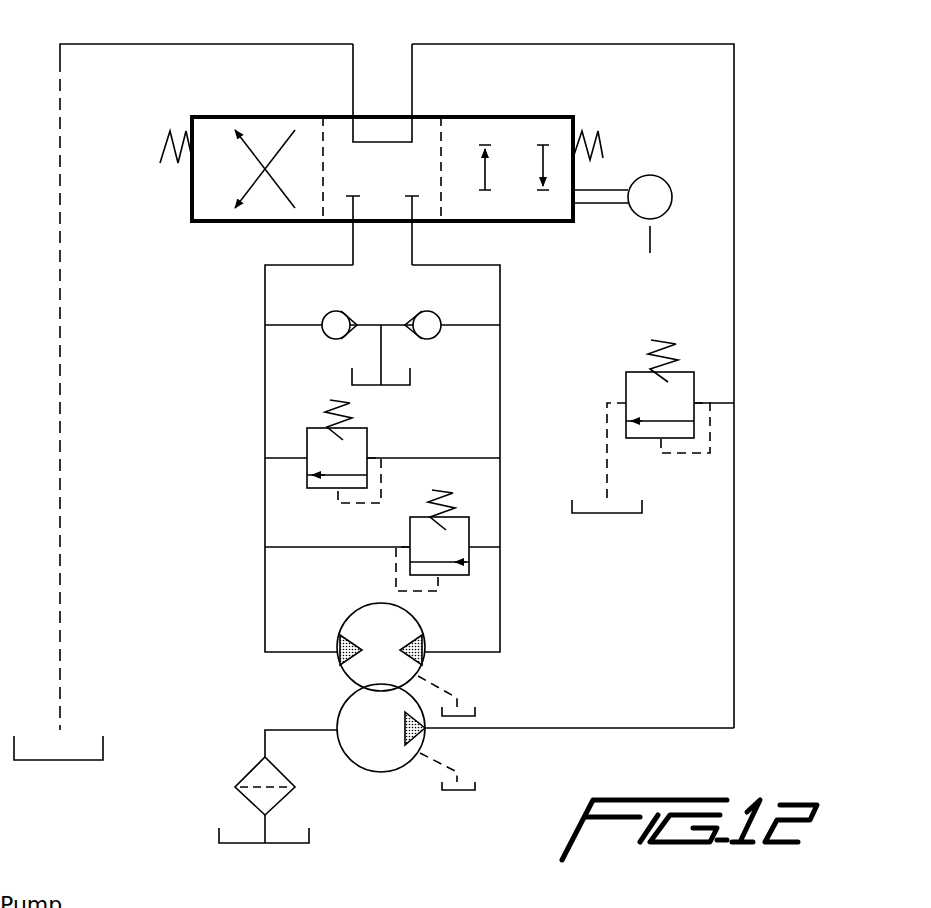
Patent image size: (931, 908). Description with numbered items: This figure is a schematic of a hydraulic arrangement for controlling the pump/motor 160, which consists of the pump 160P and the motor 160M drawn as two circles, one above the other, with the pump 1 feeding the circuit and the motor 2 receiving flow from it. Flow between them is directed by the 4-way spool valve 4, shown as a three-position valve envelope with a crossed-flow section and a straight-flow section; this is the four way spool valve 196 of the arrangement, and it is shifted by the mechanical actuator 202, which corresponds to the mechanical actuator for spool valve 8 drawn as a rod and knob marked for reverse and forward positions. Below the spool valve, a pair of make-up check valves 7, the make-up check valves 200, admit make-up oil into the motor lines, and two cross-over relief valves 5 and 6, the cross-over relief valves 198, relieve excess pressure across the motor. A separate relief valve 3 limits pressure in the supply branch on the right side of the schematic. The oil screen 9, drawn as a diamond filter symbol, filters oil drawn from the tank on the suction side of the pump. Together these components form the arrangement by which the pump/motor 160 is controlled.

The pump 1 is at (499, 760).
The motor 2 is at (440, 654).
The relief valve 3 is at (650, 401).
The 4-way spool valve 4 is at (543, 113).
The cross-over relief valve 5 is at (472, 562).
The cross-over relief valve 6 is at (348, 454).
The make-up check valves 7 is at (326, 338).
The mechanical actuator for spool valve 8 is at (653, 200).
The oil screen 9 is at (250, 768).
The pump/motor 160 is at (490, 714).
The motor 160M is at (394, 628).
The pump 160P is at (376, 757).
The four way spool valve 196 is at (478, 115).
The cross-over relief valves 198 is at (422, 545).
The make-up check valves 200 is at (382, 311).
The mechanical actuator 202 is at (650, 171).